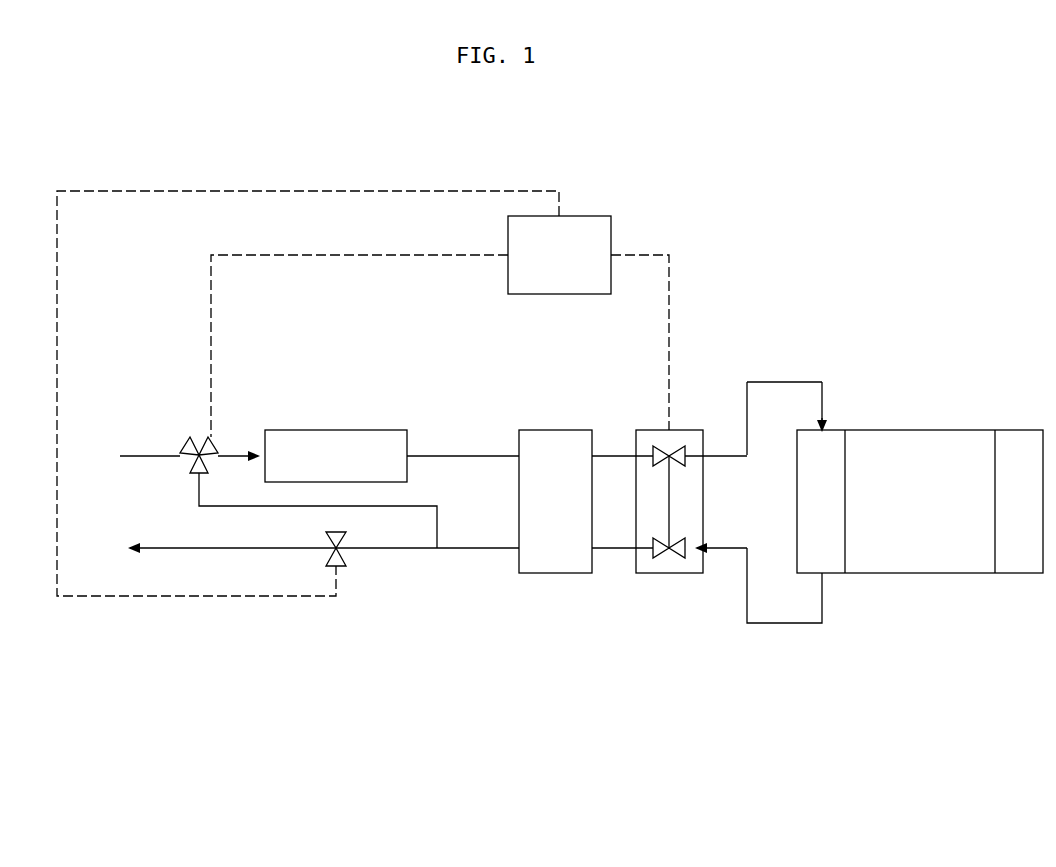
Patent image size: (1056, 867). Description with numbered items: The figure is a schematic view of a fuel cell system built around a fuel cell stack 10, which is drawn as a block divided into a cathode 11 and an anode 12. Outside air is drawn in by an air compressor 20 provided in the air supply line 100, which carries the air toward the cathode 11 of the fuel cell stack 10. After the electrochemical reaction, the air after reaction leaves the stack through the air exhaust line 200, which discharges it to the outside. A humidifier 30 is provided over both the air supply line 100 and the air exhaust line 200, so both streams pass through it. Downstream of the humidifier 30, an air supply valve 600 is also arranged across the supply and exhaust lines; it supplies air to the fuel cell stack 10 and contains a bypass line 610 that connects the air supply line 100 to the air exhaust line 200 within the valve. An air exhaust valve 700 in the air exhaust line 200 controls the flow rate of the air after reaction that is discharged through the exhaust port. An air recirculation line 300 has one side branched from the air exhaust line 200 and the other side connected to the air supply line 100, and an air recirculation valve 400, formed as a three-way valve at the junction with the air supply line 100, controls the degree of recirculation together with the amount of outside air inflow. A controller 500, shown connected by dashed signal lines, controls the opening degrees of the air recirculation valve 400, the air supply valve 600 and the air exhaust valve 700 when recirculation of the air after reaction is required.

The fuel cell stack 10 is at (915, 428).
The cathode 11 is at (836, 430).
The anode 12 is at (1020, 430).
The air compressor 20 is at (335, 430).
The humidifier 30 is at (559, 430).
The air supply line 100 is at (228, 455).
The air exhaust line 200 is at (777, 623).
The air recirculation line 300 is at (400, 507).
The air recirculation valve 400 is at (190, 441).
The controller 500 is at (597, 216).
The air supply valve 600 is at (692, 430).
The bypass line 610 is at (671, 501).
The air exhaust valve 700 is at (340, 568).